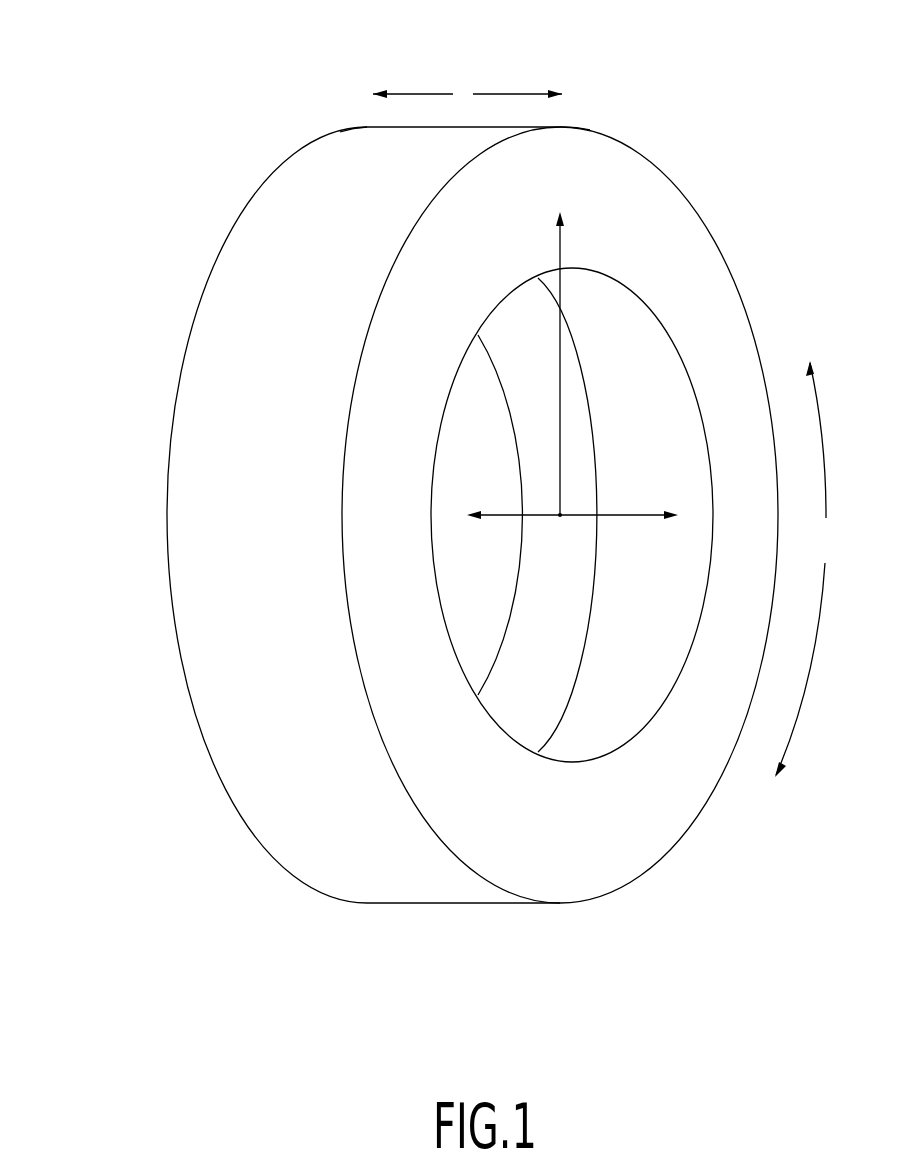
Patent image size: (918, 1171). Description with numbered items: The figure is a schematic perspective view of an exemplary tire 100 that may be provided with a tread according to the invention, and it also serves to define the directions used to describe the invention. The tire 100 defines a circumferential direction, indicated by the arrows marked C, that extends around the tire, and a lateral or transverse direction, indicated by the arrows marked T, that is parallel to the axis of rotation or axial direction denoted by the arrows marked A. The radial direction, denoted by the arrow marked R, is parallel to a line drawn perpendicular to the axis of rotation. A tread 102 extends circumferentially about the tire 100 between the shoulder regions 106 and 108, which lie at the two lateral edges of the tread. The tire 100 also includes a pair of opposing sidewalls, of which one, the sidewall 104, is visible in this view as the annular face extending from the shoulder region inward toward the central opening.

The tire 100 is at (175, 85).
The tread 102 is at (242, 354).
The sidewall 104 is at (685, 256).
The shoulder region 106 is at (358, 115).
The shoulder region 108 is at (582, 112).